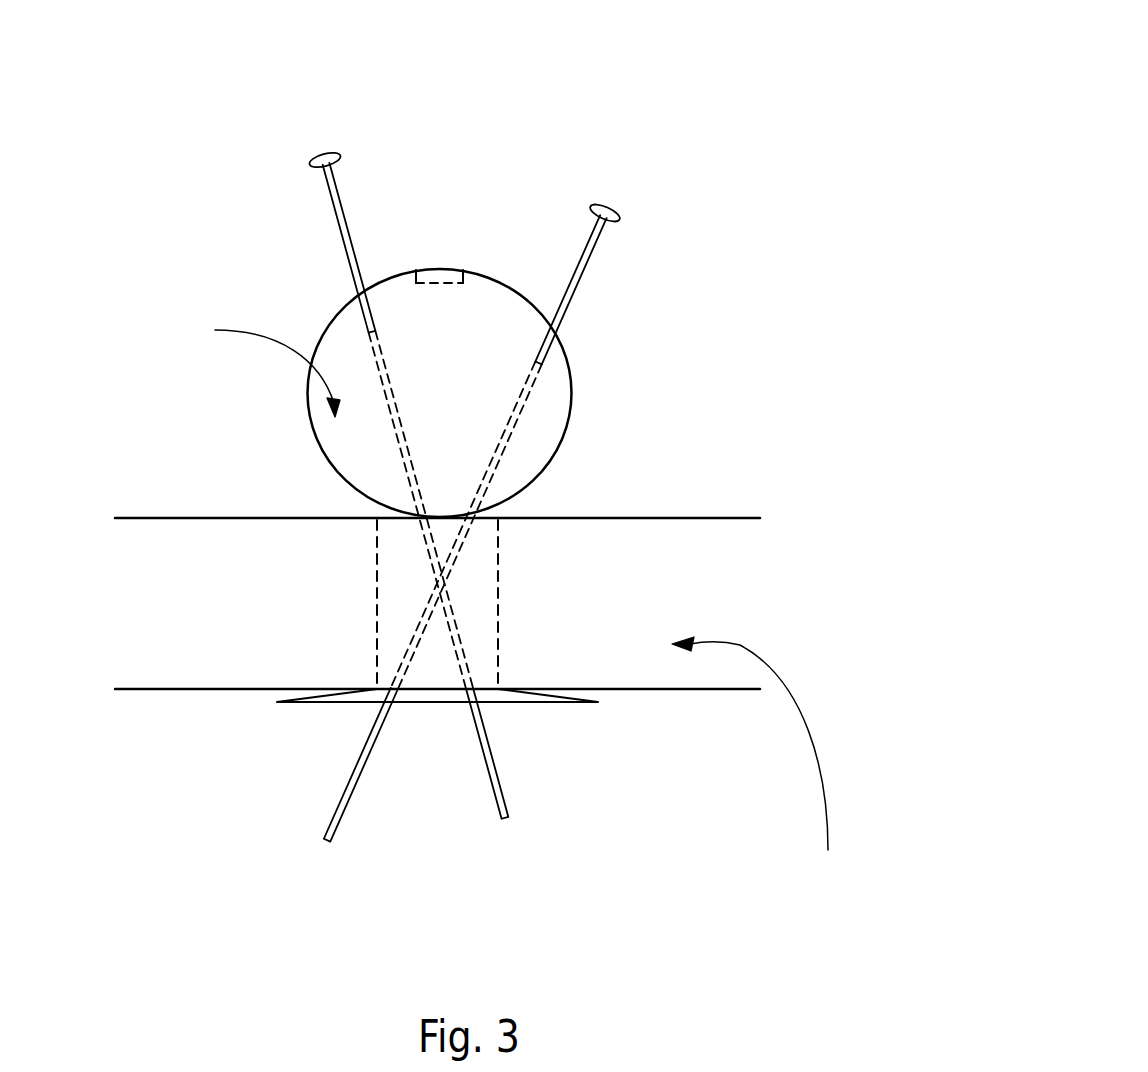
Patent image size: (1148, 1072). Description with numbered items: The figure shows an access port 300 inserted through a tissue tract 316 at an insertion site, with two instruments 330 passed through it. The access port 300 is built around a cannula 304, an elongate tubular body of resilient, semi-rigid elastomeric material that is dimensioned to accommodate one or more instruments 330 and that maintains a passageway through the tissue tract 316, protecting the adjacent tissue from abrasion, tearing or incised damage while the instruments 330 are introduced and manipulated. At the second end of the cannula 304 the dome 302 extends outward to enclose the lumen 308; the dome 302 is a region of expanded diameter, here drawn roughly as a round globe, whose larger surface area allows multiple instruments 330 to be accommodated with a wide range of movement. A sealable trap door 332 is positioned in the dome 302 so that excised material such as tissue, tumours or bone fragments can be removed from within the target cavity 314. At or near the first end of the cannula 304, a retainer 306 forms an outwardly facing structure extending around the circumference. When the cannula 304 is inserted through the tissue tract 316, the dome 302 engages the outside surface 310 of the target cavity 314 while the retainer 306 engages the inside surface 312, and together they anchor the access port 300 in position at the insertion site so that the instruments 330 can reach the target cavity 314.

The access port 300 is at (293, 98).
The dome 302 is at (384, 279).
The cannula 304 is at (499, 583).
The retainer 306 is at (528, 704).
The lumen 308 is at (246, 365).
The outside surface 310 is at (597, 517).
The inside surface 312 is at (655, 692).
The target cavity 314 is at (416, 776).
The tissue tract 316 is at (761, 765).
The instruments 330 is at (465, 450).
The sealable trap door 332 is at (441, 270).